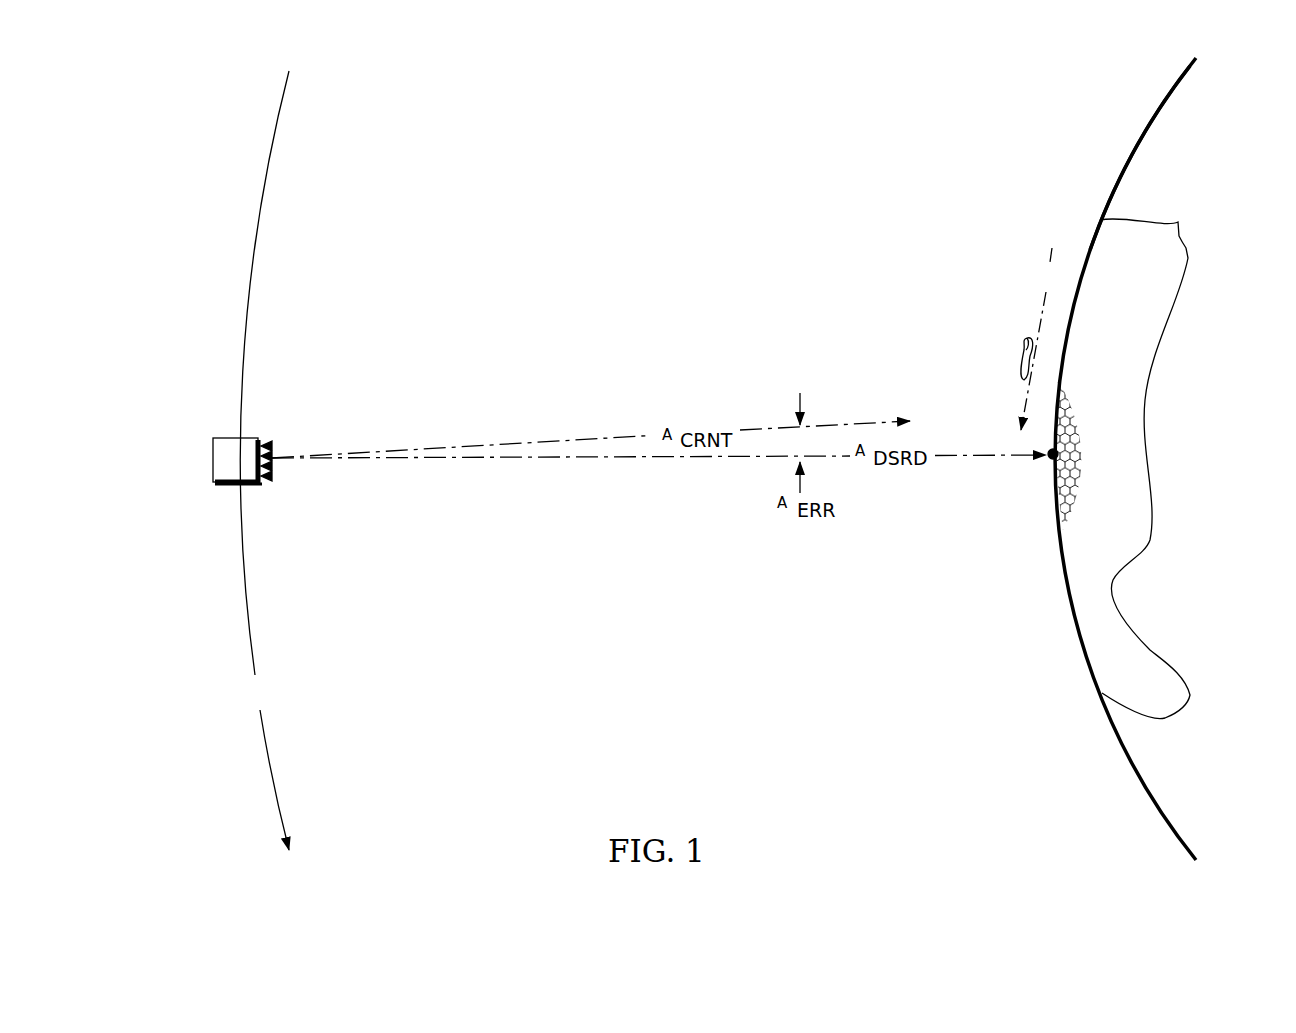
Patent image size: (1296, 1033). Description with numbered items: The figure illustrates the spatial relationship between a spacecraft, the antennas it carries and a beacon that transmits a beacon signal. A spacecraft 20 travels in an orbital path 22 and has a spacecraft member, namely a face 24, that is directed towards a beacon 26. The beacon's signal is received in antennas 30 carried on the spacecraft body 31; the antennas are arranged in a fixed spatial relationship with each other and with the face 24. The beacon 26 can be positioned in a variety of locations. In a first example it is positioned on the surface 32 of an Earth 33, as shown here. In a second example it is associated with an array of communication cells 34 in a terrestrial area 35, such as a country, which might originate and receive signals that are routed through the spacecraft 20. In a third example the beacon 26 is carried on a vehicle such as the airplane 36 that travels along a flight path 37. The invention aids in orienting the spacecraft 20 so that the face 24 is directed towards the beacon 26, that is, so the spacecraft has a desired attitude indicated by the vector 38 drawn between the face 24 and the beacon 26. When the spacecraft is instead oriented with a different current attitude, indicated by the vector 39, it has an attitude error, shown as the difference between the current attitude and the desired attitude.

The spacecraft 20 is at (252, 433).
The orbital path 22 is at (264, 460).
The face 24 is at (262, 485).
The beacon 26 is at (1045, 465).
The antennas 30 is at (272, 444).
The spacecraft body 31 is at (245, 485).
The surface 32 is at (1139, 140).
The Earth 33 is at (1150, 117).
The array of communication cells 34 is at (1088, 478).
The terrestrial area 35 is at (1190, 262).
The airplane 36 is at (1013, 348).
The flight path 37 is at (1041, 339).
The vector 38 is at (630, 460).
The vector 39 is at (590, 440).